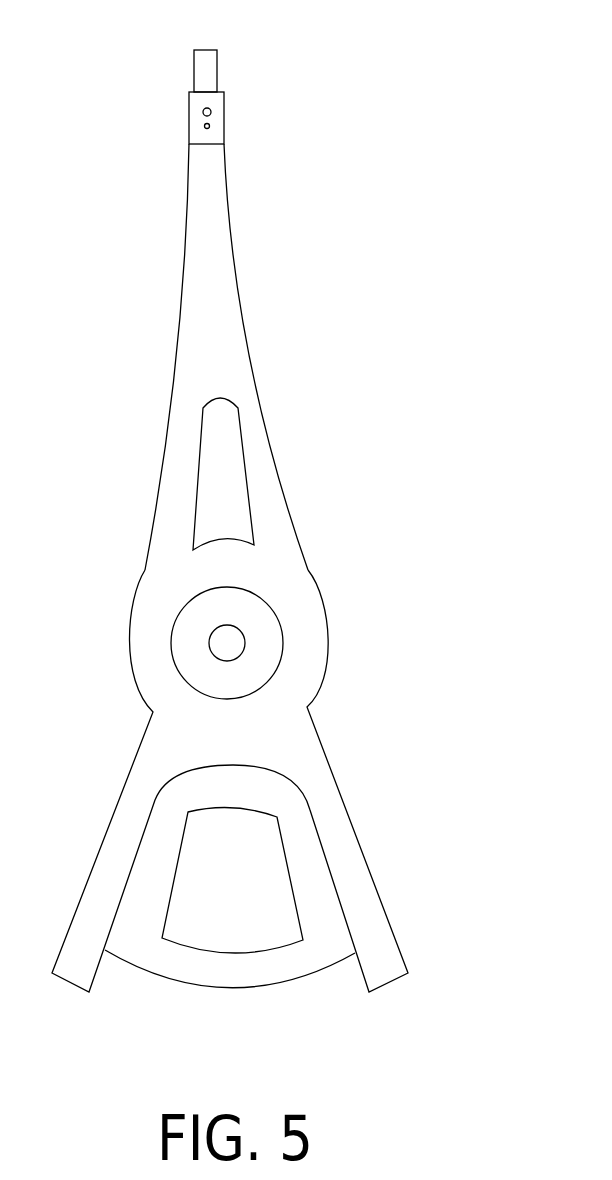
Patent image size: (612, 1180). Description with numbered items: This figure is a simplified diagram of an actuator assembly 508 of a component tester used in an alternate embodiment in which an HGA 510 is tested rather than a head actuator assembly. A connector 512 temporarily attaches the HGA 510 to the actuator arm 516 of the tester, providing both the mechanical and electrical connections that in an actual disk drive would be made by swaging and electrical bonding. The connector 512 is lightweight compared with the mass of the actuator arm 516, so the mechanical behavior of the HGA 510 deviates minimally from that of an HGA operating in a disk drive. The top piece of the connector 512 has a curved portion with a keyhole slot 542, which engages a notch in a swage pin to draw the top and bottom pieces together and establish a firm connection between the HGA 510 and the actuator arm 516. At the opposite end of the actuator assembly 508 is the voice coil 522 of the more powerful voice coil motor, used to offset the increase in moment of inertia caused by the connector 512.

The actuator assembly 508 is at (388, 106).
The HGA 510 is at (195, 67).
The connector 512 is at (188, 120).
The keyhole slot 542 is at (210, 110).
The actuator arm 516 is at (184, 255).
The voice coil 522 is at (242, 988).